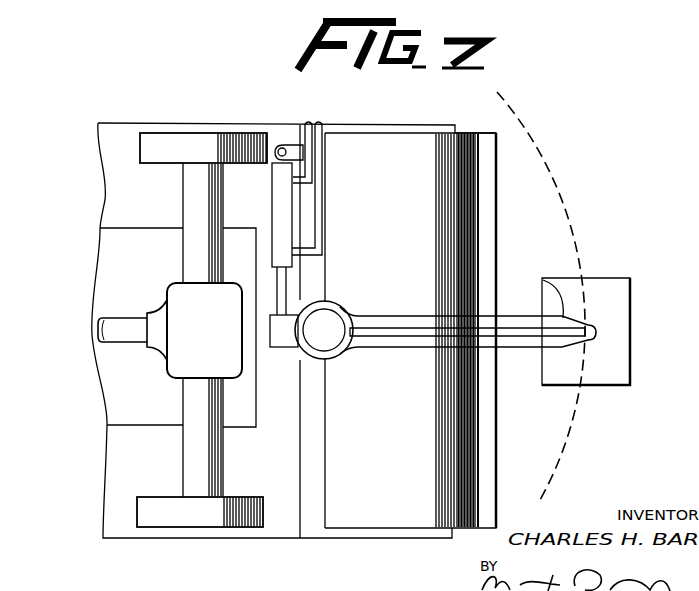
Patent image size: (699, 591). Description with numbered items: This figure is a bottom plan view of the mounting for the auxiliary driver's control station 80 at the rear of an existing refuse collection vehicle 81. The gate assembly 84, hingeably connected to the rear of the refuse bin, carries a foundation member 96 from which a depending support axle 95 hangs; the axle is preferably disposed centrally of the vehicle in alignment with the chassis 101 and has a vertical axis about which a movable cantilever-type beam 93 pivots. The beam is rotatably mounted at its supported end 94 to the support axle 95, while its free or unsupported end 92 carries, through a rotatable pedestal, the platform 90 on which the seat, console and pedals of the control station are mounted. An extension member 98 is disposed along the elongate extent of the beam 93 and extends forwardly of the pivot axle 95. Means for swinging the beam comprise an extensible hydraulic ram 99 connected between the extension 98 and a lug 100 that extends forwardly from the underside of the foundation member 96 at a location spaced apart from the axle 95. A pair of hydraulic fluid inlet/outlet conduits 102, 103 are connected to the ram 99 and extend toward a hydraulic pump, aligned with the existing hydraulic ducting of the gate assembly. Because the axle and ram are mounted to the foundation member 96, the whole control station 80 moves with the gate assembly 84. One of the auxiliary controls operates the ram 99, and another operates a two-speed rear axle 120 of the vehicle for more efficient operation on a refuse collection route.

The auxiliary driver's control station 80 is at (603, 293).
The refuse collection vehicle 81 is at (134, 497).
The gate assembly 84 is at (376, 169).
The platform 90 is at (617, 296).
The free end of beam 92 is at (543, 280).
The cantilever-type beam 93 is at (434, 342).
The supported end of beam 94 is at (332, 357).
The support axle 95 is at (330, 321).
The foundation member 96 is at (312, 528).
The extension member 98 is at (286, 336).
The hydraulic ram 99 is at (283, 207).
The lug 100 is at (292, 147).
The chassis 101 is at (127, 377).
The hydraulic fluid conduit 102 is at (308, 122).
The hydraulic fluid conduit 103 is at (320, 122).
The two-speed rear axle 120 is at (181, 297).